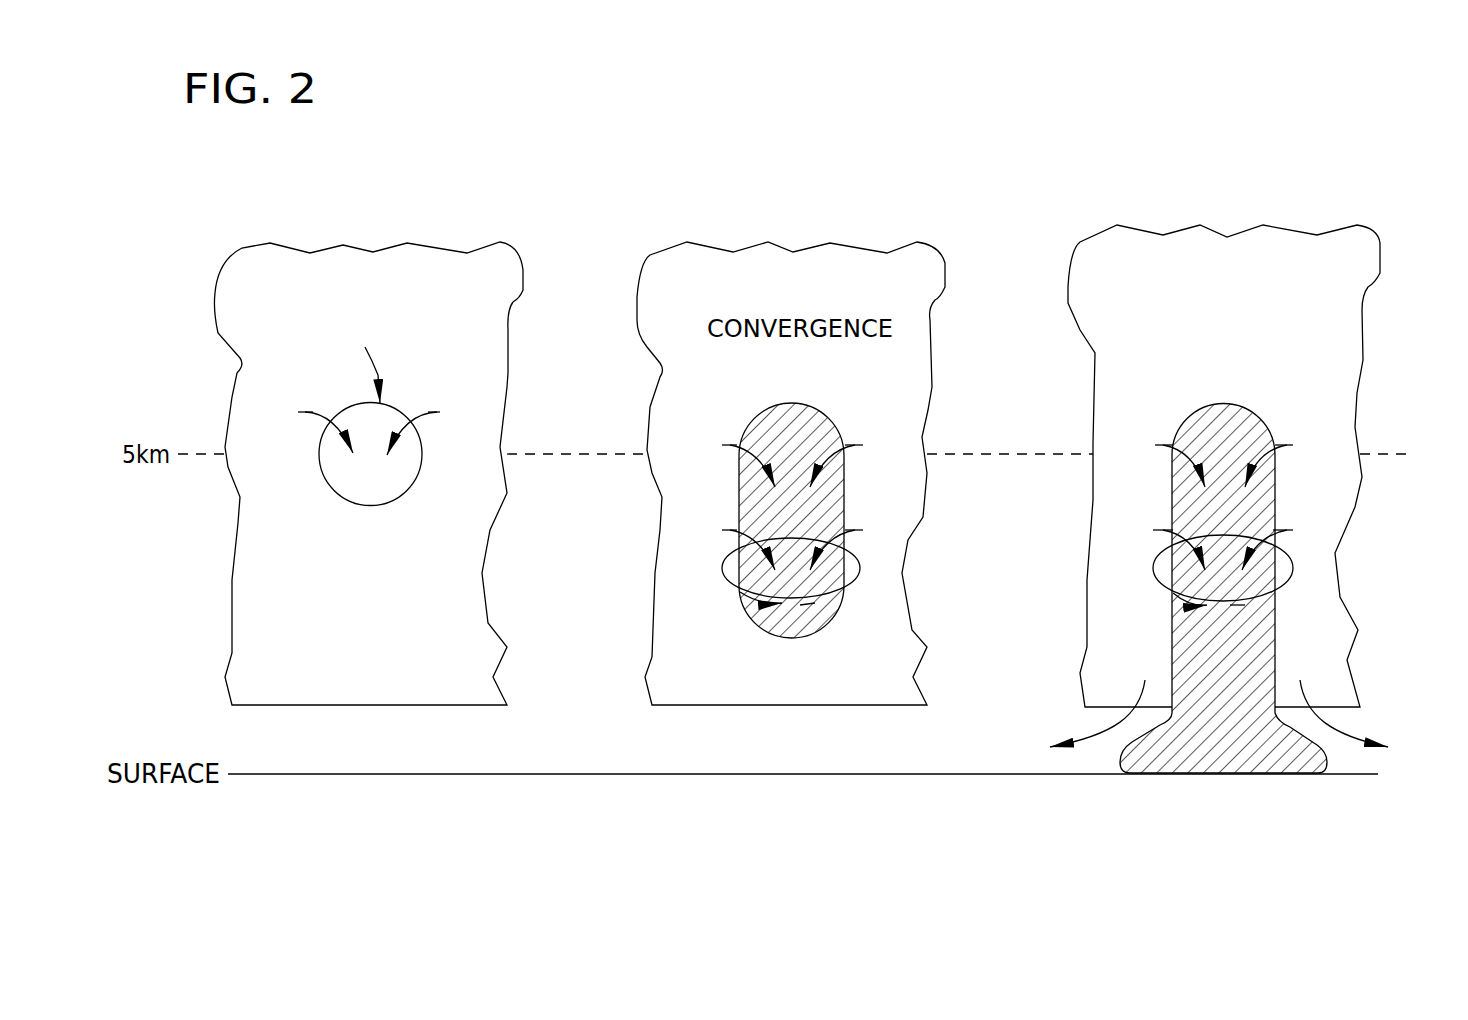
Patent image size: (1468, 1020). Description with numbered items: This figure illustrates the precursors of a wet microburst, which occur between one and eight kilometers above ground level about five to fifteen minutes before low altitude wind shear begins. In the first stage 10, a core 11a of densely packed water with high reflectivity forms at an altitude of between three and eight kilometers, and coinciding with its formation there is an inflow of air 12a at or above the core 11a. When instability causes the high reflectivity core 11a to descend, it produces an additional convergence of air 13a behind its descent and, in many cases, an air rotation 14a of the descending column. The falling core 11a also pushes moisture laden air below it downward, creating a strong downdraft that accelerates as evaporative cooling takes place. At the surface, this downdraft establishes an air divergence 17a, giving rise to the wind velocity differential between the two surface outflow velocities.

The first stage 10 is at (387, 252).
The core 11a is at (323, 478).
The inflow of air 12a is at (303, 410).
The convergence of air 13a is at (723, 445).
The air rotation 14a is at (723, 572).
The air divergence 17a is at (1100, 728).